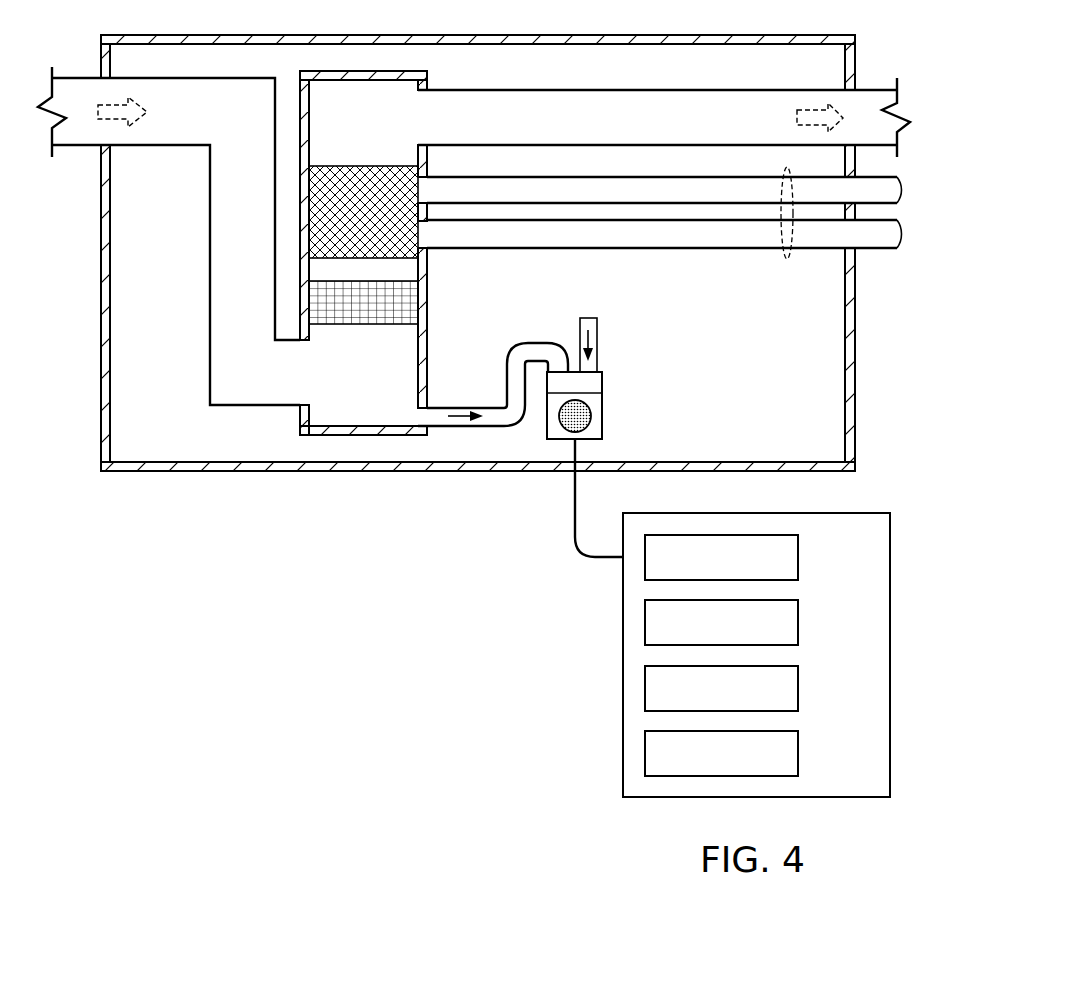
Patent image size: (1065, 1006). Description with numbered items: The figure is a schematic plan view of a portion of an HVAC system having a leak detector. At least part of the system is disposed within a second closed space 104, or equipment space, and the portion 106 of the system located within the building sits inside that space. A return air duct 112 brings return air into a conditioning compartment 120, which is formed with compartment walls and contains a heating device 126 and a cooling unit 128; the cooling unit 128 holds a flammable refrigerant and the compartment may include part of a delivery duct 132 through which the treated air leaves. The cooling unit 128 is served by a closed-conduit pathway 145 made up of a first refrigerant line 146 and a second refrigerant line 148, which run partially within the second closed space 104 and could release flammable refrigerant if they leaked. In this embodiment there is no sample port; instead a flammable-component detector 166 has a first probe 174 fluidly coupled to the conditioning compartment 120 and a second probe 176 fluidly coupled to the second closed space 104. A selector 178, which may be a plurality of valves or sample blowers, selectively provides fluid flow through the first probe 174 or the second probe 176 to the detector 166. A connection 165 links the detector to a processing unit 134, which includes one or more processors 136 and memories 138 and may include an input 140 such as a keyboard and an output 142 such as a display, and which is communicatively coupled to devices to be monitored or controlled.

The second closed space 104 is at (765, 389).
The portion of the system located within the building 106 is at (425, 303).
The return air duct 112 is at (160, 147).
The conditioning compartment 120 is at (403, 248).
The heating device 126 is at (362, 326).
The cooling unit 128 is at (362, 165).
The delivery duct 132 is at (658, 130).
The processing unit 134 is at (756, 685).
The processor 136 is at (798, 557).
The memory 138 is at (798, 622).
The input 140 is at (798, 688).
The output 142 is at (798, 753).
The closed-conduit pathway 145 is at (787, 259).
The first refrigerant line 146 is at (688, 205).
The second refrigerant line 148 is at (653, 248).
The cable 165 is at (572, 512).
The flammable-component detector 166 is at (602, 416).
The first probe 174 is at (505, 378).
The second probe 176 is at (600, 345).
The selector 178 is at (602, 383).